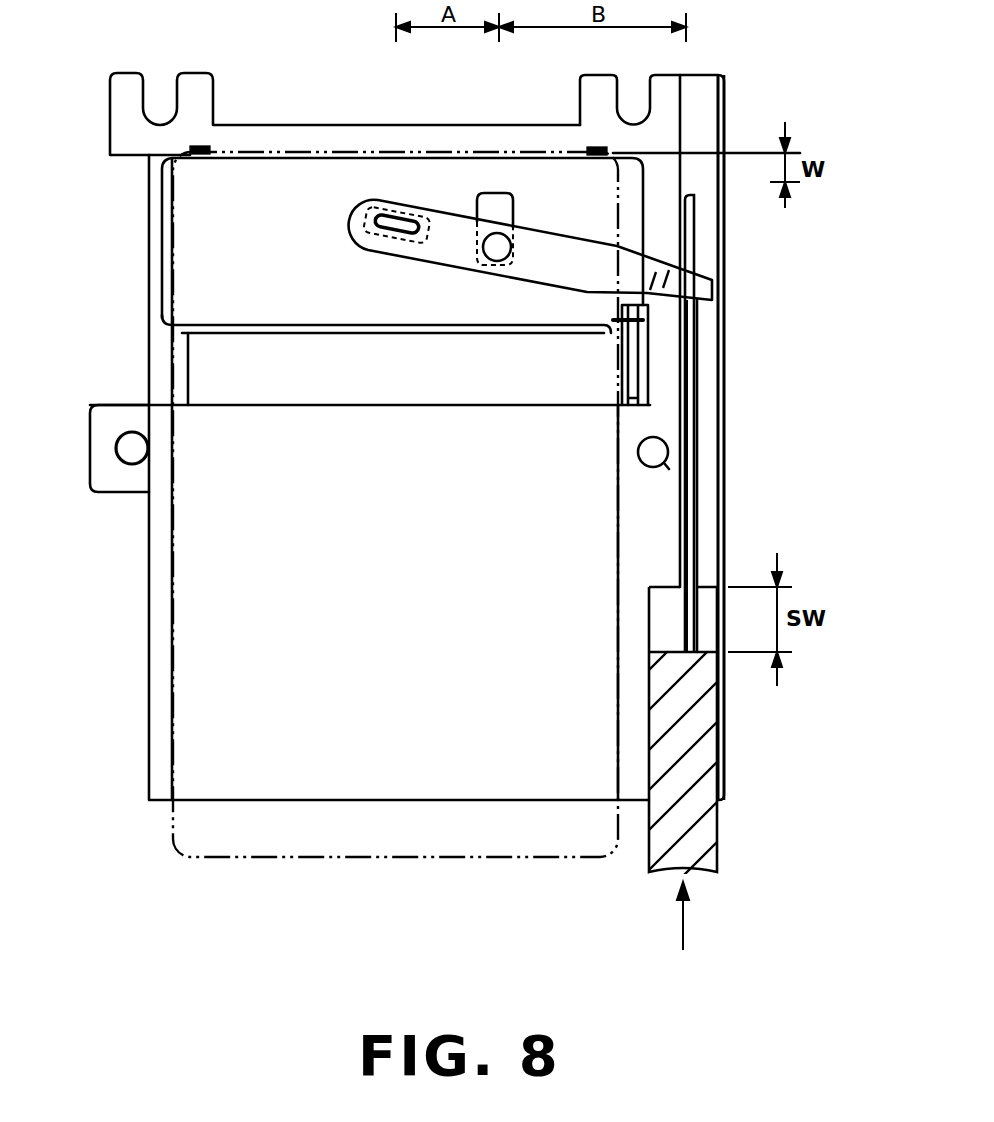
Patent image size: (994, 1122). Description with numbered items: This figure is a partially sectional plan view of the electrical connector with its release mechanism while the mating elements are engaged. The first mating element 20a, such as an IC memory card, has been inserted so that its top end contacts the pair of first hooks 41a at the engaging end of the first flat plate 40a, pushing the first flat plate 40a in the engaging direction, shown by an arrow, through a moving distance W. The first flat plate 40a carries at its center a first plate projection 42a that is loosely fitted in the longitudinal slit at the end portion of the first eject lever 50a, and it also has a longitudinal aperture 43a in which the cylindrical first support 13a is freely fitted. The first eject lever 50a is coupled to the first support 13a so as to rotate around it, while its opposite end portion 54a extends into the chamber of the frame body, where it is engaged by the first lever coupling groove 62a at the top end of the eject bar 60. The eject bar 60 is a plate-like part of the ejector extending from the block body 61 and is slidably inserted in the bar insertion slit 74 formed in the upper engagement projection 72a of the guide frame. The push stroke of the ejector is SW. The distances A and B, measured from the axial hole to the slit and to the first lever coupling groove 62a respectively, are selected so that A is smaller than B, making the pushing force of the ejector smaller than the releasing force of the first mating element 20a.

The first support 13a is at (490, 262).
The first mating element 20a is at (283, 852).
The first flat plate 40a is at (197, 268).
The first hooks 41a is at (205, 145).
The first plate projection 42a is at (393, 216).
The longitudinal aperture 43a is at (490, 200).
The first eject lever 50a is at (560, 252).
The opposite end portion 54a is at (694, 290).
The eject bar 60 is at (695, 248).
The block body 61 is at (718, 823).
The first lever coupling groove 62a is at (690, 222).
The upper engagement projection 72a is at (708, 358).
The bar insertion slit 74 is at (689, 428).